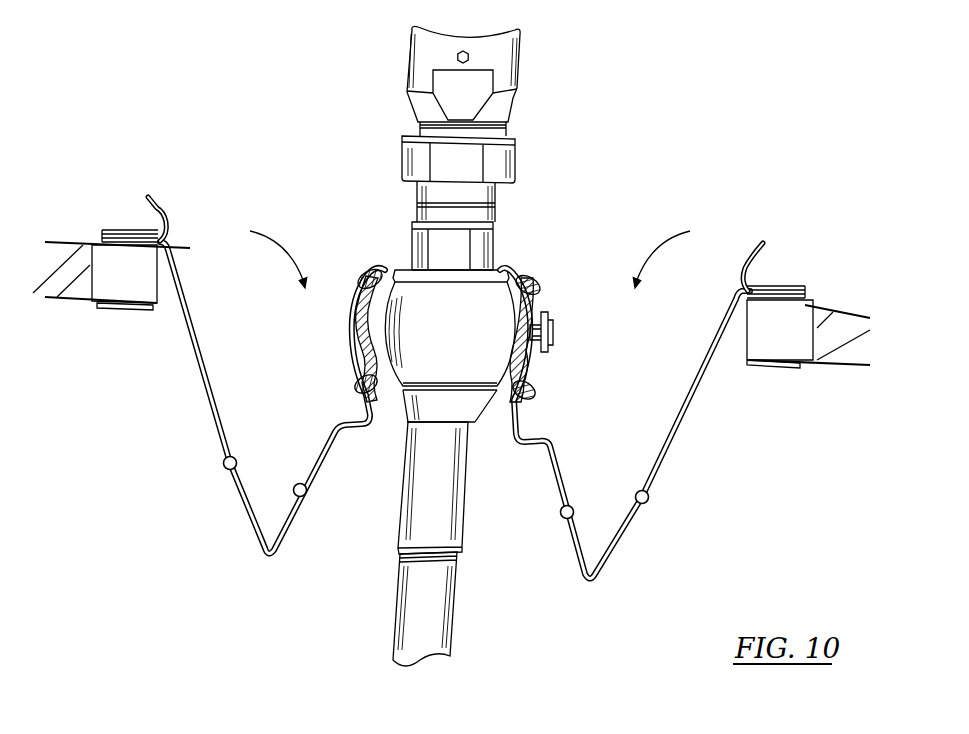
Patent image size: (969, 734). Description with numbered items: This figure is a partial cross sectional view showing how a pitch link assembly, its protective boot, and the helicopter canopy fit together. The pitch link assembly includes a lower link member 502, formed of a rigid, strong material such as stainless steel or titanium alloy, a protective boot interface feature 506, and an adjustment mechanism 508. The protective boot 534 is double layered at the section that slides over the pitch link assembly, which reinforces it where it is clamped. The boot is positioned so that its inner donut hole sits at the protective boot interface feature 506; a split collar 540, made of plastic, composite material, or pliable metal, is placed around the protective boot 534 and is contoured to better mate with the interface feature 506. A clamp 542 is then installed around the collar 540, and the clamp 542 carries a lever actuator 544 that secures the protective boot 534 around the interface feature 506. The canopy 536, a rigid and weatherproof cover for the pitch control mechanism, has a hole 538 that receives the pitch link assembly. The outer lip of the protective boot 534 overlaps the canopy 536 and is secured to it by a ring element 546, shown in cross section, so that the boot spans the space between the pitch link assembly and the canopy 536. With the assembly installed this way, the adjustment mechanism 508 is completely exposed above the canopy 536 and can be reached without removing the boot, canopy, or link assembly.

The lower link member 502 is at (462, 588).
The protective boot interface feature 506 is at (470, 339).
The adjustment mechanism 508 is at (516, 68).
The protective boot 534 is at (203, 393).
The canopy 536 is at (72, 246).
The hole 538 is at (468, 250).
The split collar 540 is at (370, 275).
The clamp 542 is at (355, 345).
The lever actuator 544 is at (546, 323).
The ring element 546 is at (166, 208).